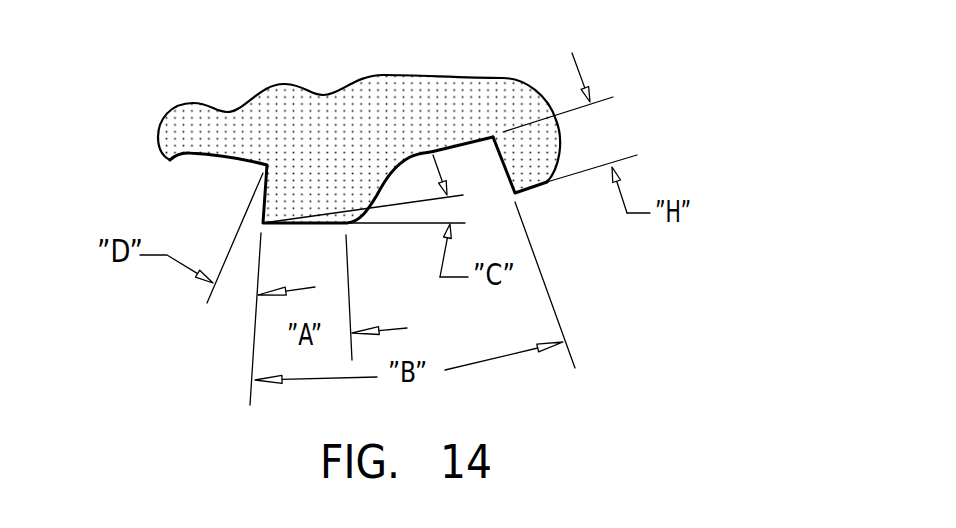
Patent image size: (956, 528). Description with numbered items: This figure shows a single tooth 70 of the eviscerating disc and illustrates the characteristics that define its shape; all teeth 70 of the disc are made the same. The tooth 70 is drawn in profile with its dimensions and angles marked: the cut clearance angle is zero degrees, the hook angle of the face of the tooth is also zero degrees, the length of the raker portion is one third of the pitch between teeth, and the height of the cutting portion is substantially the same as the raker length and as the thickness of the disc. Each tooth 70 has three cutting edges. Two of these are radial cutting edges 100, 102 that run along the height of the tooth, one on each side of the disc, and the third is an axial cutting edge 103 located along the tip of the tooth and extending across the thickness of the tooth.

The tooth 70 is at (217, 198).
The radial cutting edge 100 is at (500, 162).
The radial cutting edge 102 is at (500, 162).
The axial cutting edge 103 is at (515, 198).